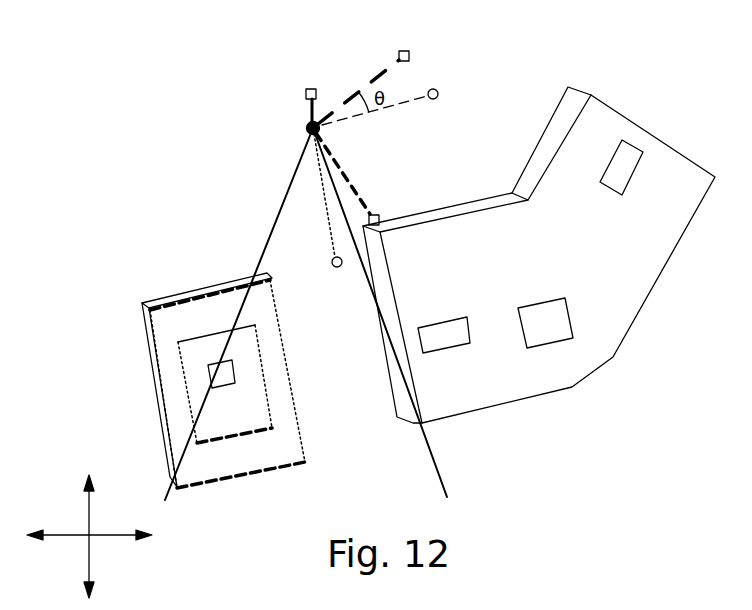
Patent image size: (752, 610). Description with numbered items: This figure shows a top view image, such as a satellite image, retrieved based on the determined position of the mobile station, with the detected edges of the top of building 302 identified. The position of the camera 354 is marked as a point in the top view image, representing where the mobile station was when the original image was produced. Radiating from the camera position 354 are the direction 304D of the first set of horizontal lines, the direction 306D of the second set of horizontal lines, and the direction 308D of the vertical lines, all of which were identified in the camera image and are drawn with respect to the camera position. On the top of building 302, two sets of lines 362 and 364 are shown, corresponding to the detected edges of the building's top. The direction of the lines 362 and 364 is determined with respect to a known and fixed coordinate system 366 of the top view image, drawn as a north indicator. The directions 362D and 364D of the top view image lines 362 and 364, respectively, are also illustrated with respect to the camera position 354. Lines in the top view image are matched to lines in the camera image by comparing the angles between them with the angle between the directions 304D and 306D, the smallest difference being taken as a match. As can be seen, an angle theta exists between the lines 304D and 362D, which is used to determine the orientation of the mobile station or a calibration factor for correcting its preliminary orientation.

The building 302 is at (142, 303).
The direction of the first set of horizontal lines 304D is at (399, 56).
The direction of the second set of horizontal lines 306D is at (376, 212).
The direction of the vertical lines 308D is at (304, 94).
The position of the camera 354 is at (311, 127).
The first set of top view image lines 362 is at (203, 290).
The direction of the first set of top view image lines 362D is at (432, 89).
The second set of top view image lines 364 is at (288, 358).
The direction of the second set of top view image lines 364D is at (333, 258).
The coordinate system 366 is at (89, 564).